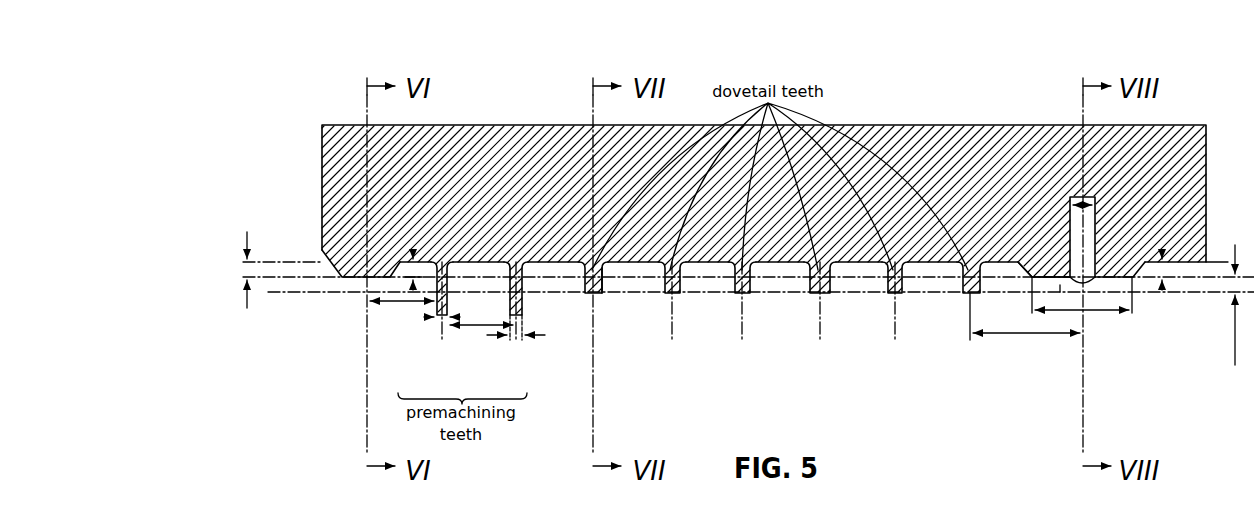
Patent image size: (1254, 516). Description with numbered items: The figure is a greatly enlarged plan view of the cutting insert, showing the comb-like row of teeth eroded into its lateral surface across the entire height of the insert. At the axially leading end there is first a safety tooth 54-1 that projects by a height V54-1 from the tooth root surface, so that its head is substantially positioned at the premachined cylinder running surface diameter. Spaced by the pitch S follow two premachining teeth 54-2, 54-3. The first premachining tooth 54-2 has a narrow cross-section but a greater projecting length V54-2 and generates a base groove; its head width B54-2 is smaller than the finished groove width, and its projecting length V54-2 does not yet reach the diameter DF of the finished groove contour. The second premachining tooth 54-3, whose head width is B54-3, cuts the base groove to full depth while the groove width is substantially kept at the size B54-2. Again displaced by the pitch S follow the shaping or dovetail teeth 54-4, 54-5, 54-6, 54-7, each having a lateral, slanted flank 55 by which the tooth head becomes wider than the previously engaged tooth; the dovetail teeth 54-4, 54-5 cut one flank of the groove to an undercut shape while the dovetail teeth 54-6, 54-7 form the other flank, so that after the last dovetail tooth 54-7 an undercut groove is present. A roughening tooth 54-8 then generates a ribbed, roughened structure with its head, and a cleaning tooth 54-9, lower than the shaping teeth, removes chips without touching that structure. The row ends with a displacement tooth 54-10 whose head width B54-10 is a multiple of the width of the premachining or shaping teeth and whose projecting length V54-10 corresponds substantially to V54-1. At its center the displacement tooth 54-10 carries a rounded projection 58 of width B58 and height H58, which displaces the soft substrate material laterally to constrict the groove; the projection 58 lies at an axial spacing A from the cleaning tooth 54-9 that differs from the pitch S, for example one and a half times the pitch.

The safety tooth 54-1 is at (340, 271).
The first premachining tooth 54-2 is at (448, 282).
The second premachining tooth 54-3 is at (523, 282).
The dovetail tooth 54-4 is at (592, 295).
The dovetail tooth 54-5 is at (668, 295).
The dovetail tooth 54-6 is at (738, 295).
The dovetail tooth 54-7 is at (815, 295).
The roughening tooth 54-8 is at (891, 295).
The cleaning tooth 54-9 is at (966, 295).
The displacement tooth 54-10 is at (1136, 274).
The slanted flank 55 is at (600, 282).
The rounded projection 58 is at (1090, 282).
The projecting length of safety tooth V54-1 is at (245, 270).
The projecting length of first premachining tooth V54-2 is at (413, 282).
The tooth head width of first premachining tooth B54-2 is at (440, 322).
The tooth head width of second premachining tooth B54-3 is at (528, 337).
The pitch S is at (441, 313).
The axial spacing A is at (1025, 316).
The height of projection H58 is at (1058, 288).
The tooth head width of displacement tooth B54-10 is at (1082, 334).
The width of projection B58 is at (1080, 200).
The projecting length of displacement tooth V54-10 is at (1163, 272).
The diameter of finished groove contour DF is at (1238, 315).